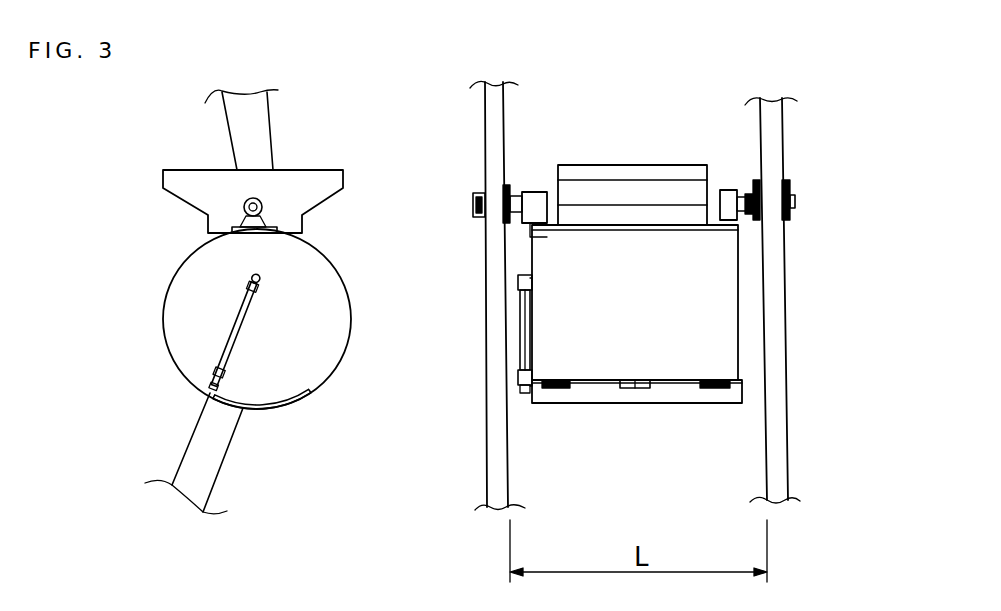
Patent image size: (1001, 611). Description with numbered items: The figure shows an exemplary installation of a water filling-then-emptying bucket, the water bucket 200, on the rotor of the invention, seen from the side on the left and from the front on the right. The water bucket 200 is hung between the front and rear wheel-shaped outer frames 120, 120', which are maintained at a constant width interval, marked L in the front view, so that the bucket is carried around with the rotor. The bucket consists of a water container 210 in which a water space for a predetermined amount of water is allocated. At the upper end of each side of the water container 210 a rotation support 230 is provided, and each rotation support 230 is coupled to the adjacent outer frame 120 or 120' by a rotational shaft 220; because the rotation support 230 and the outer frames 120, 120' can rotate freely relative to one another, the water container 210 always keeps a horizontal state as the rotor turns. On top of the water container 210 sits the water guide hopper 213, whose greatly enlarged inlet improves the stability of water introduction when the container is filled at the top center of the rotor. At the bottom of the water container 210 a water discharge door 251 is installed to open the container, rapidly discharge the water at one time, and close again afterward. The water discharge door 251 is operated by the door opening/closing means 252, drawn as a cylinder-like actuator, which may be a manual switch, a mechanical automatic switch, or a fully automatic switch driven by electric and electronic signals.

The water bucket 200 is at (134, 218).
The water guide hopper 213 is at (310, 173).
The rotational shaft 220 is at (244, 204).
The rotation support 230 is at (268, 212).
The water container 210 is at (162, 300).
The water discharge door 251 is at (273, 408).
The door opening/closing means 252 is at (250, 350).
The front wheel-shaped outer frame 120 is at (277, 297).
The rear wheel-shaped outer frame 120' is at (828, 300).